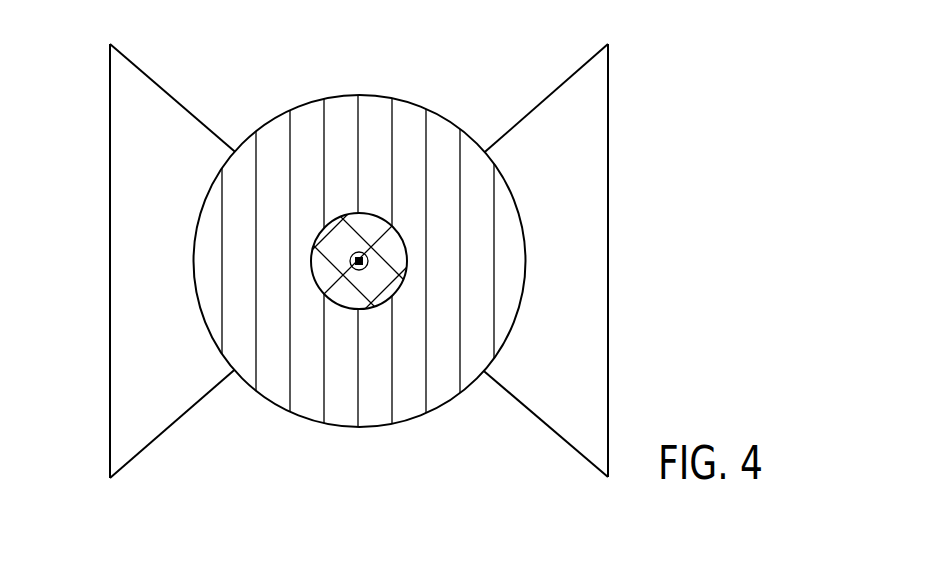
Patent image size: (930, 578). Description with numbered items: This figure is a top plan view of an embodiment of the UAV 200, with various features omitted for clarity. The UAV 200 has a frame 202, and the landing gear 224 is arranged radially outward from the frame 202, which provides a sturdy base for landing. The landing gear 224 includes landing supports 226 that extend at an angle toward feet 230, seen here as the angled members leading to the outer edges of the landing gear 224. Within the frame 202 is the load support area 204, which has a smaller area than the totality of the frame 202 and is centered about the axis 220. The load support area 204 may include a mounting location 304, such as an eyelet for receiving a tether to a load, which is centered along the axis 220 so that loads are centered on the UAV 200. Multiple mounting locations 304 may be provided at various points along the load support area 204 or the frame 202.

The UAV 200 is at (379, 239).
The frame 202 is at (482, 403).
The load support area 204 is at (350, 318).
The axis 220 is at (365, 255).
The landing gear 224 is at (372, 261).
The landing supports 226 is at (172, 424).
The feet 230 is at (110, 262).
The mounting location 304 is at (328, 244).